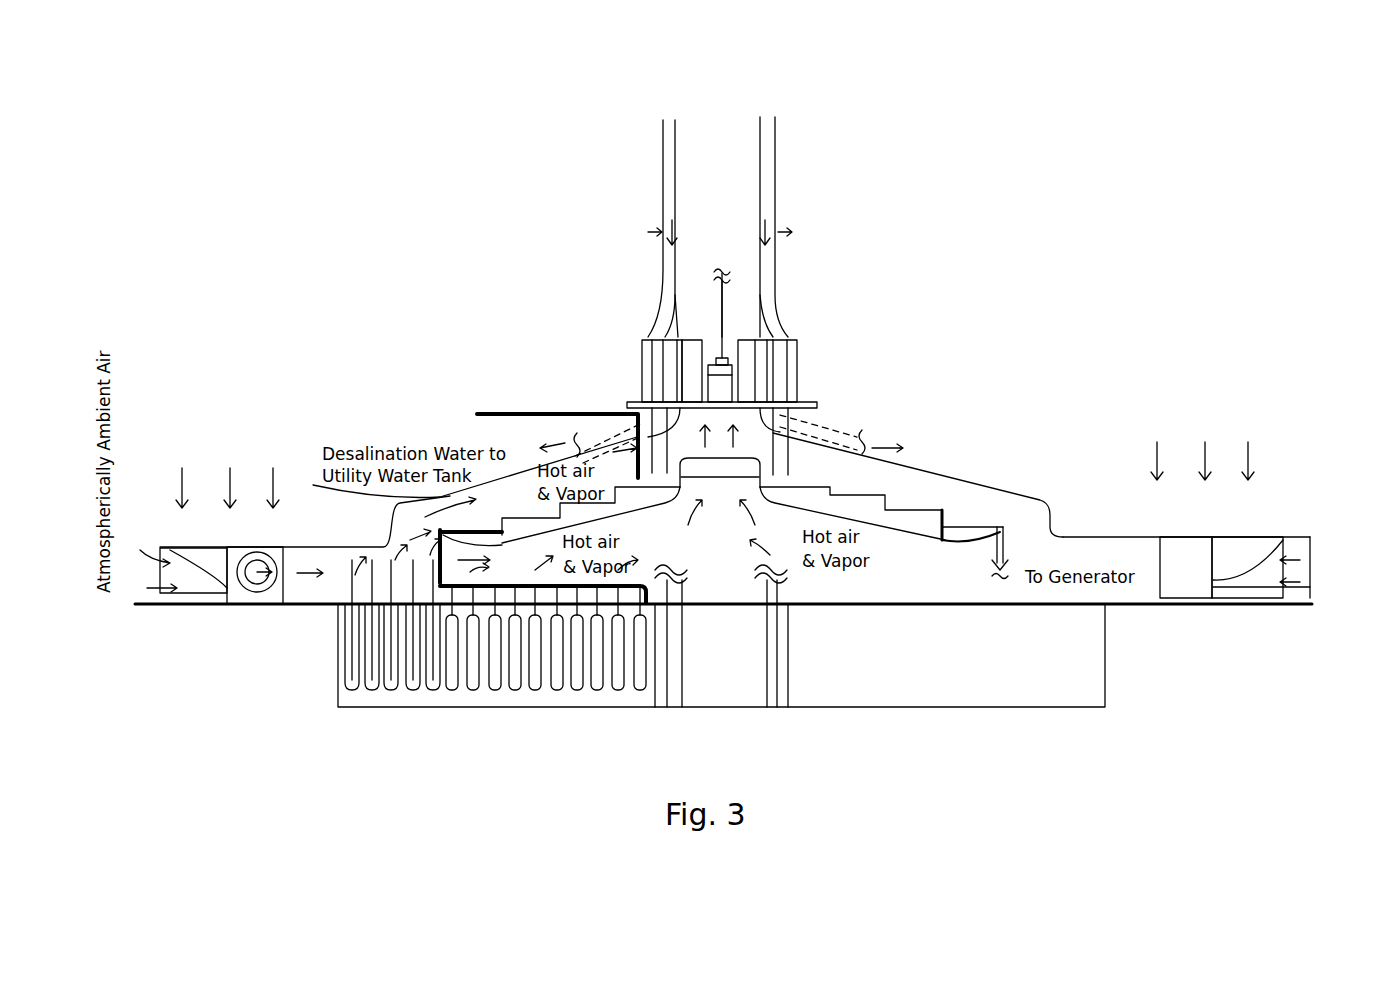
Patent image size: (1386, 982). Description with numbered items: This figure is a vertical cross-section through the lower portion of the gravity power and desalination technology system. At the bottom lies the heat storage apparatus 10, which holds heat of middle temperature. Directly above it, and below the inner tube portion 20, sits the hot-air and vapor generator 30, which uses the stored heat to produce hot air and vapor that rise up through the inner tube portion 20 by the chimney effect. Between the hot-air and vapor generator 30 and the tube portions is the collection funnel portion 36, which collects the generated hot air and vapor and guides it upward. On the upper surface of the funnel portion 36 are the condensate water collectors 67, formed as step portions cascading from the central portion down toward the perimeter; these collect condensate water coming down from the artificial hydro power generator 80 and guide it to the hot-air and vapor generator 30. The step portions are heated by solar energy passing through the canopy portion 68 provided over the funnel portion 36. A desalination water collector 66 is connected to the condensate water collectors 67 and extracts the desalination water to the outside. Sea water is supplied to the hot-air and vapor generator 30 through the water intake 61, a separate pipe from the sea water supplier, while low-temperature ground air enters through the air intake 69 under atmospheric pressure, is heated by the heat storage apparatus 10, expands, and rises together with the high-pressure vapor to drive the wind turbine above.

The heat storage apparatus 10 is at (372, 651).
The inner tube portion 20 is at (675, 120).
The hot-air and vapor generator 30 is at (943, 530).
The collection funnel portion 36 is at (1048, 502).
The water intake 61 is at (575, 410).
The desalination water collector 66 is at (580, 440).
The condensate water collectors 67 is at (777, 457).
The canopy portion 68 is at (313, 485).
The air intake 69 is at (145, 578).
The artificial hydro power generator 80 is at (648, 337).